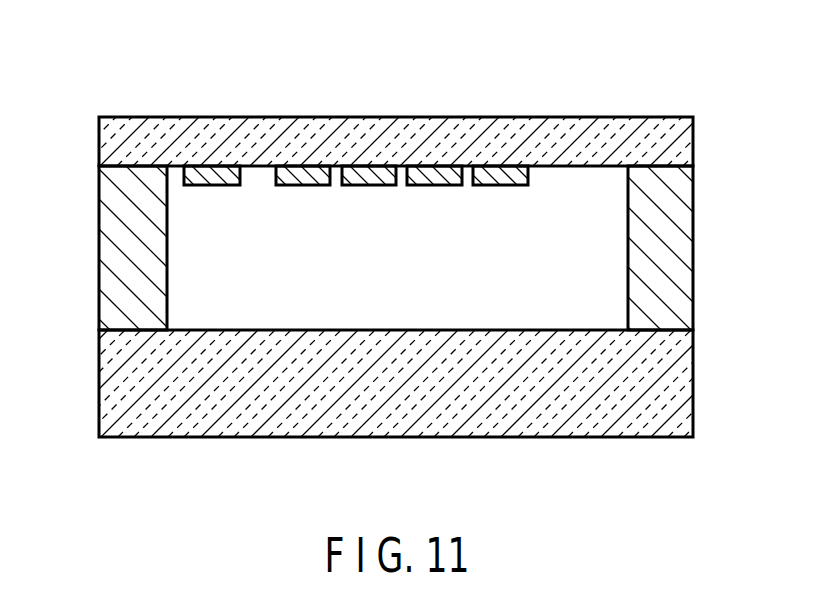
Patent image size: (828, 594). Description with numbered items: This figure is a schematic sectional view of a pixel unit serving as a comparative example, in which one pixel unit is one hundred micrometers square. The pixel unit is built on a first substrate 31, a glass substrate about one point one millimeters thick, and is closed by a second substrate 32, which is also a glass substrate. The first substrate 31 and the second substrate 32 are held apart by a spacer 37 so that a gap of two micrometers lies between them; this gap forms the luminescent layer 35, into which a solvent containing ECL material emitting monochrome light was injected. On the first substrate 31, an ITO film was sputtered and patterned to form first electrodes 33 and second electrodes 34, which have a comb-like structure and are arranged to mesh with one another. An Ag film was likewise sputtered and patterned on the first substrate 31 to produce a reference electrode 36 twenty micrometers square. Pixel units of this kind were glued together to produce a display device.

The first substrate 31 is at (159, 125).
The second substrate 32 is at (355, 437).
The first electrode 33 is at (303, 172).
The second electrode 34 is at (372, 172).
The luminescent layer 35 is at (607, 237).
The reference electrode 36 is at (208, 172).
The spacer 37 is at (113, 305).